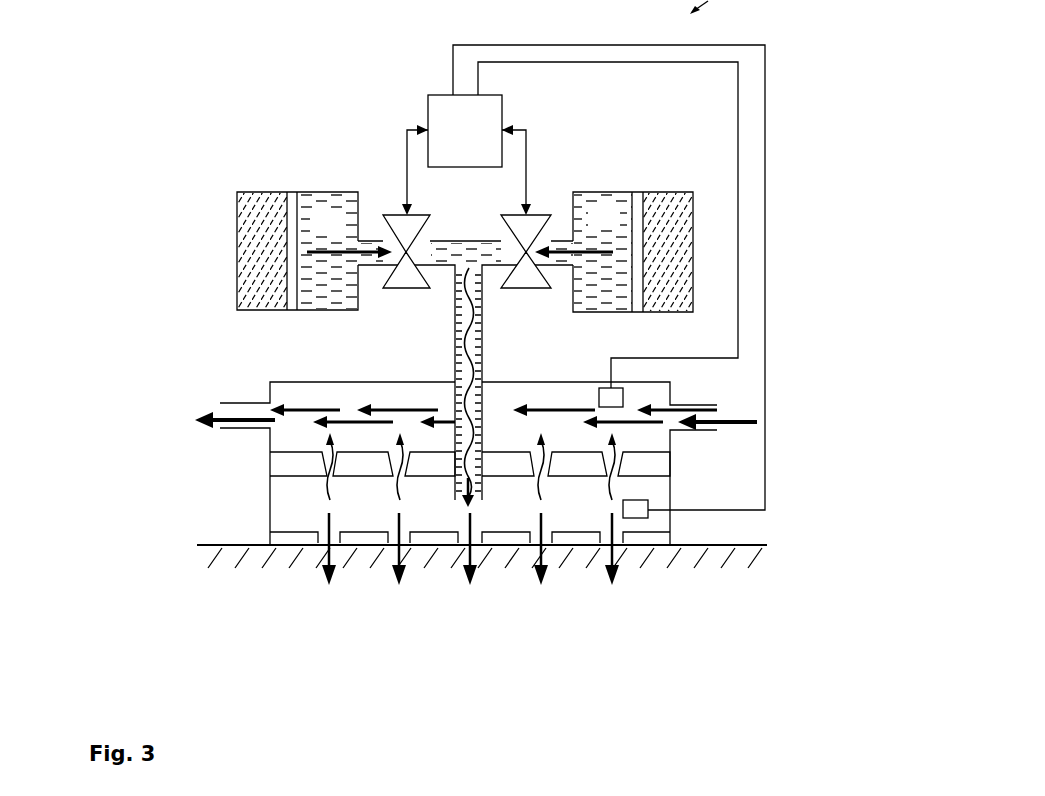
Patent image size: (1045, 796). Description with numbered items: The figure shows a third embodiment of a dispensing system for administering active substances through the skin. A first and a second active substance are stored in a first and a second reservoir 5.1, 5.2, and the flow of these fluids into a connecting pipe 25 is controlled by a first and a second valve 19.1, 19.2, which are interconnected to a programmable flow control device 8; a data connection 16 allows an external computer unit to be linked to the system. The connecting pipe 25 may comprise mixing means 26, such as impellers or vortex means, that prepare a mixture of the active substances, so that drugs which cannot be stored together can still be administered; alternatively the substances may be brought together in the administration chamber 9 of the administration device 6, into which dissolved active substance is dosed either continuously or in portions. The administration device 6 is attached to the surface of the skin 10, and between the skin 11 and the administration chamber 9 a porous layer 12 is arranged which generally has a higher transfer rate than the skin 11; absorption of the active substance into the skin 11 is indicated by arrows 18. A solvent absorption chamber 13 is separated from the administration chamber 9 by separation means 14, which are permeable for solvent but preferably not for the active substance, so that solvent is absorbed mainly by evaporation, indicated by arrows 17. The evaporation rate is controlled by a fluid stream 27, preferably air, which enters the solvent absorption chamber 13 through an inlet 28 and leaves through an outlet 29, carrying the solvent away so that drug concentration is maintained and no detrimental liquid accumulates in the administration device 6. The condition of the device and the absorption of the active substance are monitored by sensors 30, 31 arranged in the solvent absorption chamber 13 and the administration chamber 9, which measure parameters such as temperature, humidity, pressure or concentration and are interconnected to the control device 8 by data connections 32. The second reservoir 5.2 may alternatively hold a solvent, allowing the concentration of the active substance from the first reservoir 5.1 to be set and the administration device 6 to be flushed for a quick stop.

The first reservoir 5.1 is at (237, 242).
The second reservoir 5.2 is at (693, 277).
The administration device 6 is at (214, 329).
The programmable flow control device 8 is at (465, 131).
The administration chamber 9 is at (287, 503).
The surface of the skin 10 is at (733, 545).
The skin 11 is at (273, 557).
The porous layer 12 is at (287, 537).
The solvent absorption chamber 13 is at (285, 392).
The separation means 14 is at (290, 466).
The data connection 16 is at (407, 160).
The arrows indicating evaporation 17 is at (618, 450).
The arrows indicating absorption 18 is at (615, 572).
The first valve 19.1 is at (553, 190).
The second valve 19.2 is at (385, 214).
The connecting pipe 25 is at (482, 327).
The mixing means 26 is at (455, 353).
The fluid stream 27 is at (200, 425).
The inlet 28 is at (717, 402).
The outlet 29 is at (232, 398).
The sensor 30 is at (623, 397).
The sensor 31 is at (648, 503).
The data connections 32 is at (767, 212).